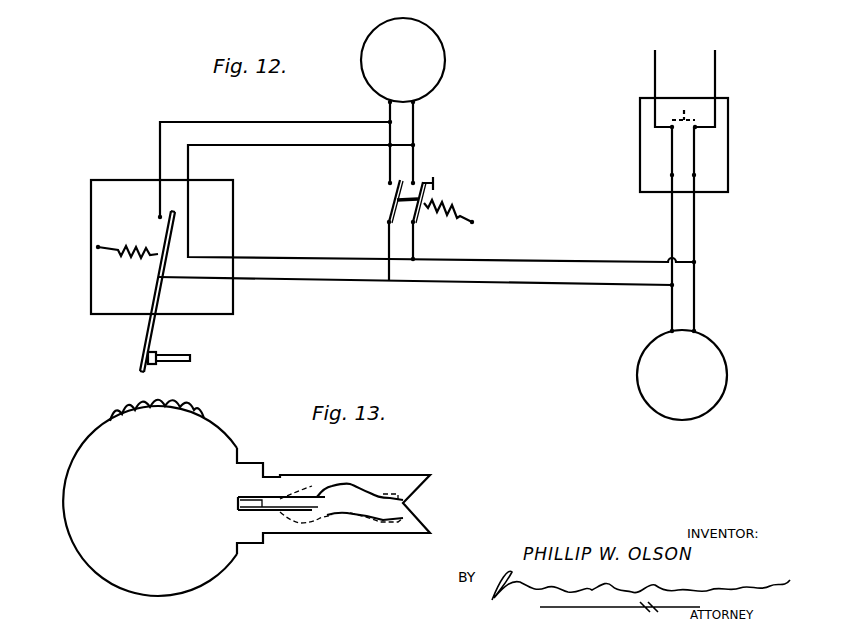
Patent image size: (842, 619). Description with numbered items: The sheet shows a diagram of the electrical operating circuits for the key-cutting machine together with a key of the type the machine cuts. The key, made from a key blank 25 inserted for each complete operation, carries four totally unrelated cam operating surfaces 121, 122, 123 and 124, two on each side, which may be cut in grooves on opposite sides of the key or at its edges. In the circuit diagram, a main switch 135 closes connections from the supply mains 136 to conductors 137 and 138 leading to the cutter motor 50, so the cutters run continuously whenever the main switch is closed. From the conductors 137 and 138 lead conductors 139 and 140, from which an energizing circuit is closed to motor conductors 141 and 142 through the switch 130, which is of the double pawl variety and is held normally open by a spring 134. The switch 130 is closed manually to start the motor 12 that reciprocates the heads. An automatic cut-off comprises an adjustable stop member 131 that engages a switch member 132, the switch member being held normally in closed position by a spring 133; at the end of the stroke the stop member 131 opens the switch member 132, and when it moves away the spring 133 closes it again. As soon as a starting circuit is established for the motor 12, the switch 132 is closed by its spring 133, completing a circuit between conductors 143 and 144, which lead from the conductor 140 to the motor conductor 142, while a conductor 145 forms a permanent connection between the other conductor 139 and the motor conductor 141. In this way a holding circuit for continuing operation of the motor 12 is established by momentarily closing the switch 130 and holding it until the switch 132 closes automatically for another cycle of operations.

In FIG. 12, the motor 12 is at (446, 63).
In FIG. 13, the key blank 25 is at (88, 458).
In FIG. 12, the cutter motor 50 is at (724, 352).
In FIG. 13, the cam surface 121 is at (325, 492).
In FIG. 13, the cam surface 122 is at (345, 518).
In FIG. 13, the cam surface 123 is at (305, 485).
In FIG. 13, the cam surface 124 is at (290, 512).
In FIG. 12, the switch 130 is at (395, 200).
In FIG. 12, the adjustable stop member 131 is at (173, 352).
In FIG. 12, the switch member 132 is at (147, 342).
In FIG. 12, the spring 133 is at (118, 252).
In FIG. 12, the spring 134 is at (448, 210).
In FIG. 12, the main switch 135 is at (672, 152).
In FIG. 12, the supply mains 136 is at (655, 70).
In FIG. 12, the conductor 137 is at (672, 224).
In FIG. 12, the conductor 138 is at (696, 226).
In FIG. 12, the conductor 139 is at (440, 259).
In FIG. 12, the conductor 140 is at (487, 282).
In FIG. 12, the motor conductor 141 is at (414, 113).
In FIG. 12, the motor conductor 142 is at (390, 110).
In FIG. 12, the conductor 143 is at (205, 122).
In FIG. 12, the conductor 144 is at (268, 282).
In FIG. 12, the conductor 145 is at (265, 148).